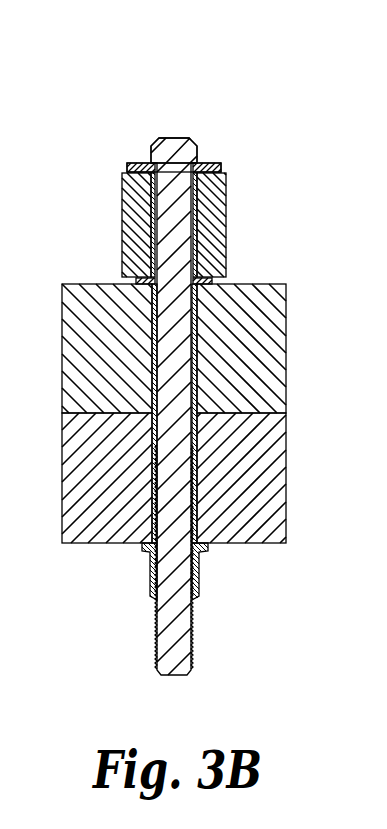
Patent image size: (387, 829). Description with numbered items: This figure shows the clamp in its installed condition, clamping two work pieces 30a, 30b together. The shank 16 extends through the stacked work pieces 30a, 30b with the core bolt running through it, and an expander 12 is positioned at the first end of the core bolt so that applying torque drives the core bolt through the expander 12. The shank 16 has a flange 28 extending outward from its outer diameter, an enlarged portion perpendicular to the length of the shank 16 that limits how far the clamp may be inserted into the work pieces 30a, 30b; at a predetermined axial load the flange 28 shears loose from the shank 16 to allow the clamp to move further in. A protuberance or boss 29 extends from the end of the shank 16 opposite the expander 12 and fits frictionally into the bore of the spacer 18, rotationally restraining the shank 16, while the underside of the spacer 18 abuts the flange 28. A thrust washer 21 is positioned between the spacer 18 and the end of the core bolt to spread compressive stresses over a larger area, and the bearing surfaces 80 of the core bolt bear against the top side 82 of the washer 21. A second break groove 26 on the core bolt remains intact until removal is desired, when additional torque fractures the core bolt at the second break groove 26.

The expander 12 is at (198, 581).
The shank 16 is at (190, 463).
The spacer 18 is at (207, 237).
The thrust washer 21 is at (118, 140).
The second break groove 26 is at (212, 146).
The flange 28 is at (213, 282).
The protuberance 29 is at (195, 210).
The work piece 30a is at (285, 383).
The work piece 30b is at (275, 442).
The bearing surfaces 80 is at (158, 160).
The top side 82 is at (137, 162).